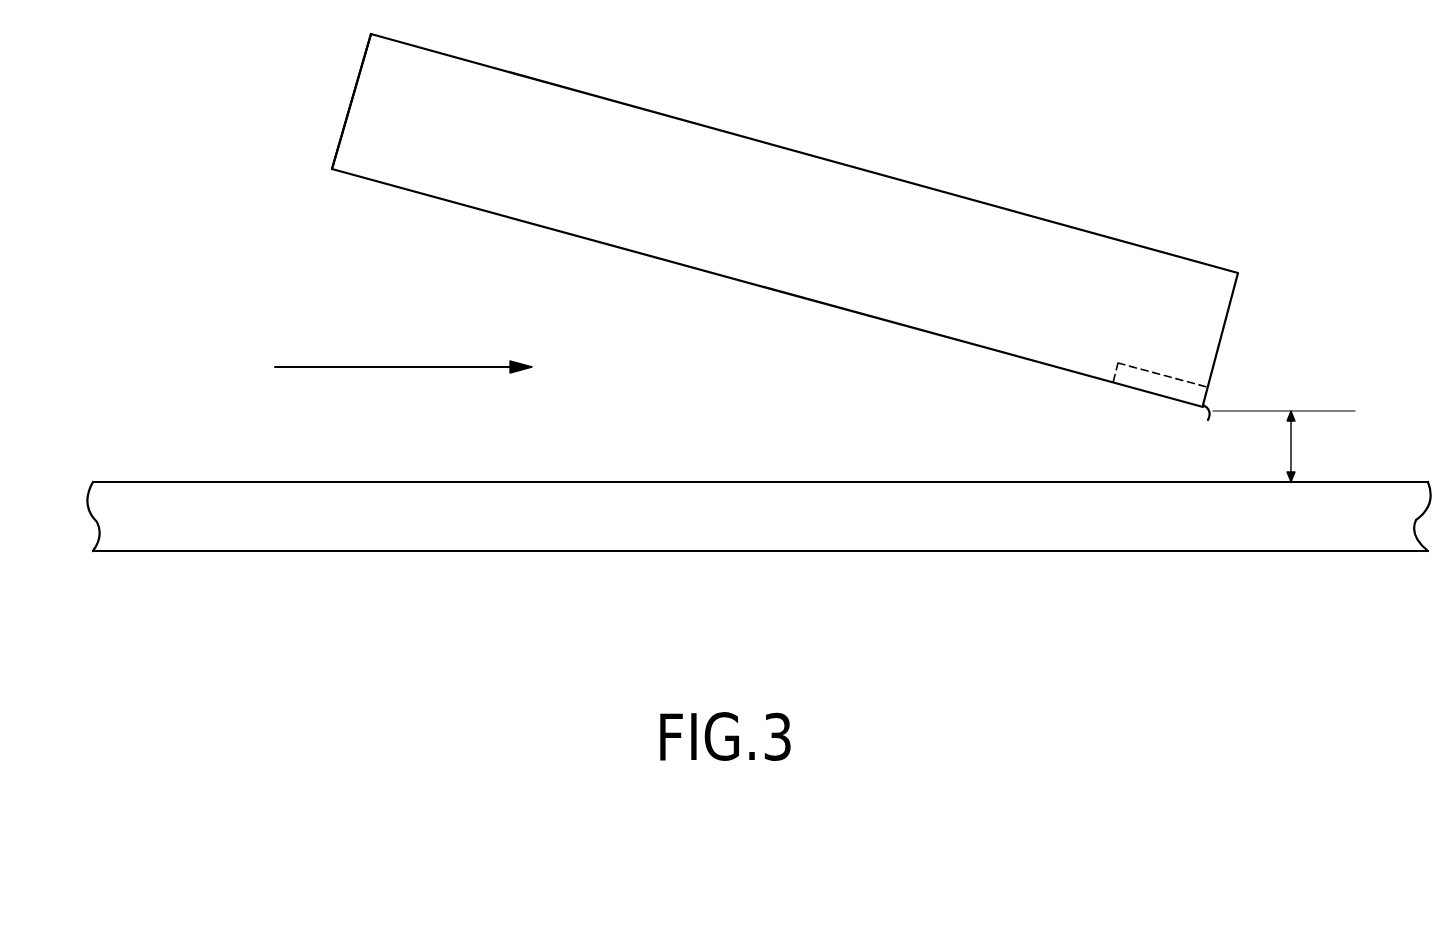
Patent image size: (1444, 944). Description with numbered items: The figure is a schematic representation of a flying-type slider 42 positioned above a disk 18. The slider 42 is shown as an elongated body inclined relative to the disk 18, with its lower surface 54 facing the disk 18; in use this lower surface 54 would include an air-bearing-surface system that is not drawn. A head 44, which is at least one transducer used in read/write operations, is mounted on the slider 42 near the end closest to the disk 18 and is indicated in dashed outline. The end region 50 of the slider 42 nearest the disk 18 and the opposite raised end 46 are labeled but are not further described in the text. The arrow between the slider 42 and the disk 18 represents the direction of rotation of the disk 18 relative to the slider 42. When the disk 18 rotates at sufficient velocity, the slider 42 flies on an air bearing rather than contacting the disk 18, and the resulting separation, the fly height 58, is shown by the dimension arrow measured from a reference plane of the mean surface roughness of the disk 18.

The disk 18 is at (410, 482).
The slider 42 is at (798, 236).
The head 44 is at (1147, 385).
The rear edge 46 is at (332, 169).
The rounded tip 50 is at (1208, 420).
The lower surface 54 is at (463, 210).
The fly height 58 is at (1291, 448).